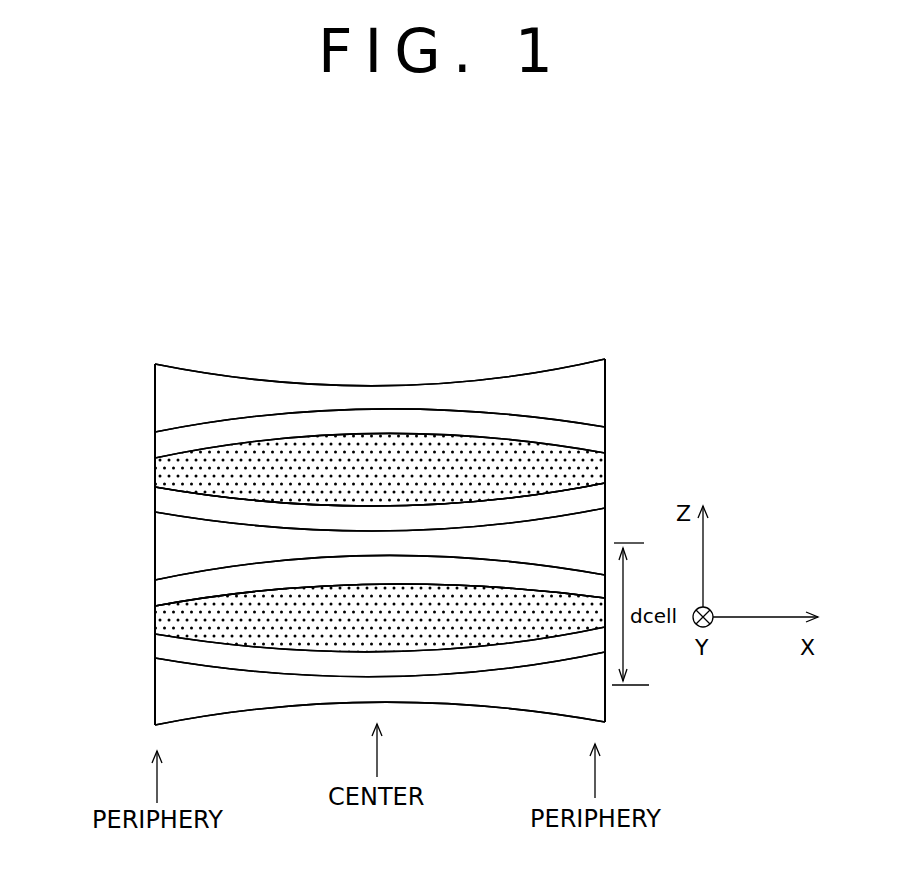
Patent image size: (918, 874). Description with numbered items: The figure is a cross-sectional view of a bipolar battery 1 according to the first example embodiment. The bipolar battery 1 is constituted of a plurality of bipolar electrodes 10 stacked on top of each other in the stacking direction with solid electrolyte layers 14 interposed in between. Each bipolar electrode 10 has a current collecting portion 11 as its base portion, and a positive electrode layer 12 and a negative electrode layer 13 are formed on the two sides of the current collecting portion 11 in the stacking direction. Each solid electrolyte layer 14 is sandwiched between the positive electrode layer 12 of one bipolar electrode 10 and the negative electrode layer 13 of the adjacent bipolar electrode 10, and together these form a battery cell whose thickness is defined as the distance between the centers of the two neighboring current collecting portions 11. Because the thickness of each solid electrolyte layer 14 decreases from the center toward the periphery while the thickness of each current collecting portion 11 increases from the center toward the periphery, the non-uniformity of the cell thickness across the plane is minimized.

The bipolar battery 1 is at (190, 347).
The bipolar electrode 10 is at (62, 488).
The current collecting portion 11 is at (589, 390).
The positive electrode layer 12 is at (176, 499).
The negative electrode layer 13 is at (589, 437).
The solid electrolyte layer 14 is at (160, 470).